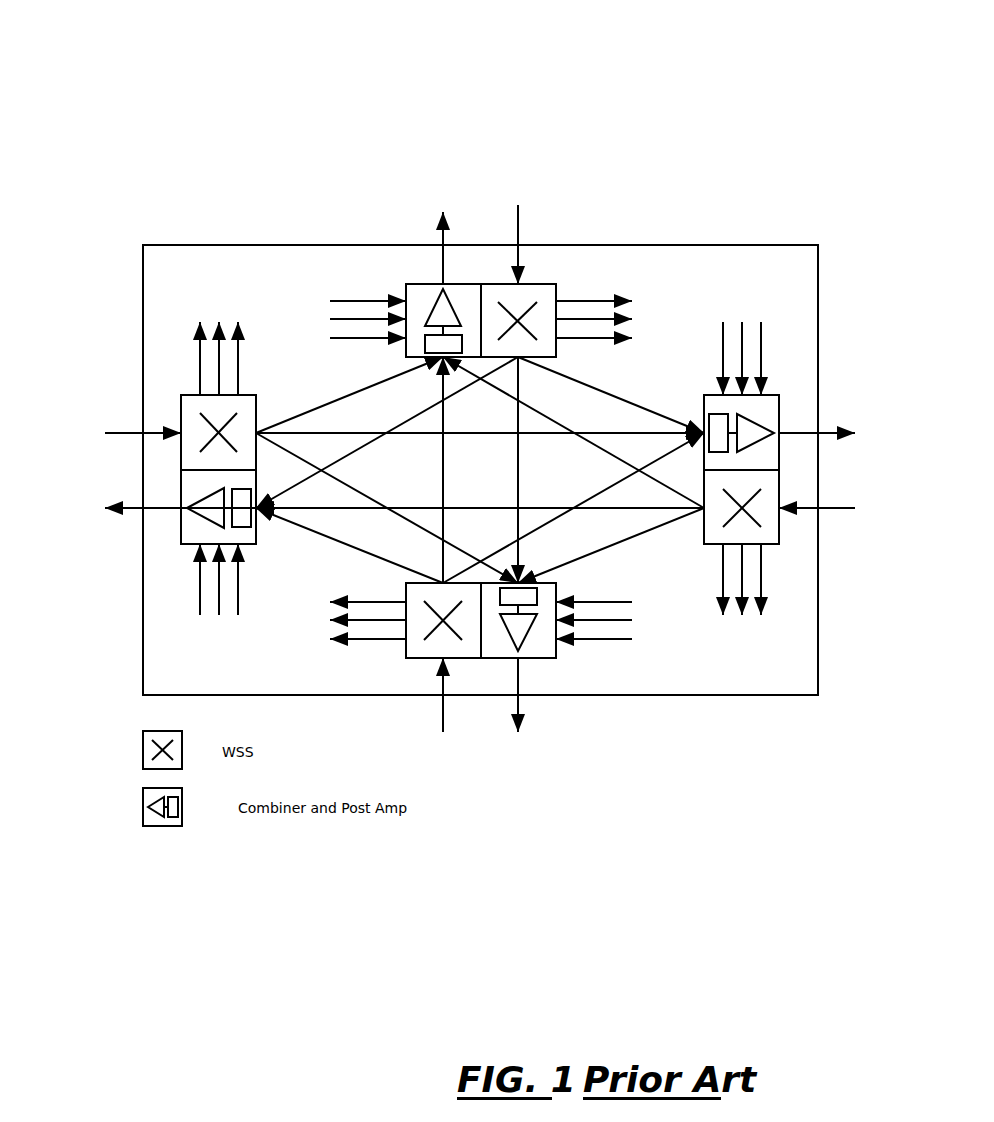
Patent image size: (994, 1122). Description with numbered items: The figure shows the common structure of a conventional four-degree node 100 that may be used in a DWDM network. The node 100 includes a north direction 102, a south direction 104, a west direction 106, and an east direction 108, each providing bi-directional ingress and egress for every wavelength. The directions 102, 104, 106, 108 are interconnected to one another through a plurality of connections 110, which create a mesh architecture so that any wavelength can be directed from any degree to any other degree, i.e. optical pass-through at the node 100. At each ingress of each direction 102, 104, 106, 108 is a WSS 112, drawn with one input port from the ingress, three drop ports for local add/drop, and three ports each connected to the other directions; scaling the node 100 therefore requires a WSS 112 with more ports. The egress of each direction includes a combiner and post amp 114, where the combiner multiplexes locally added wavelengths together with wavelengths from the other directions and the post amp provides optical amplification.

The four-degree node 100 is at (560, 62).
The north direction 102 is at (490, 246).
The south direction 104 is at (487, 730).
The west direction 106 is at (93, 412).
The east direction 108 is at (847, 412).
The connections 110 is at (480, 470).
The WSS 112 is at (535, 284).
The combiner and post amp 114 is at (425, 284).